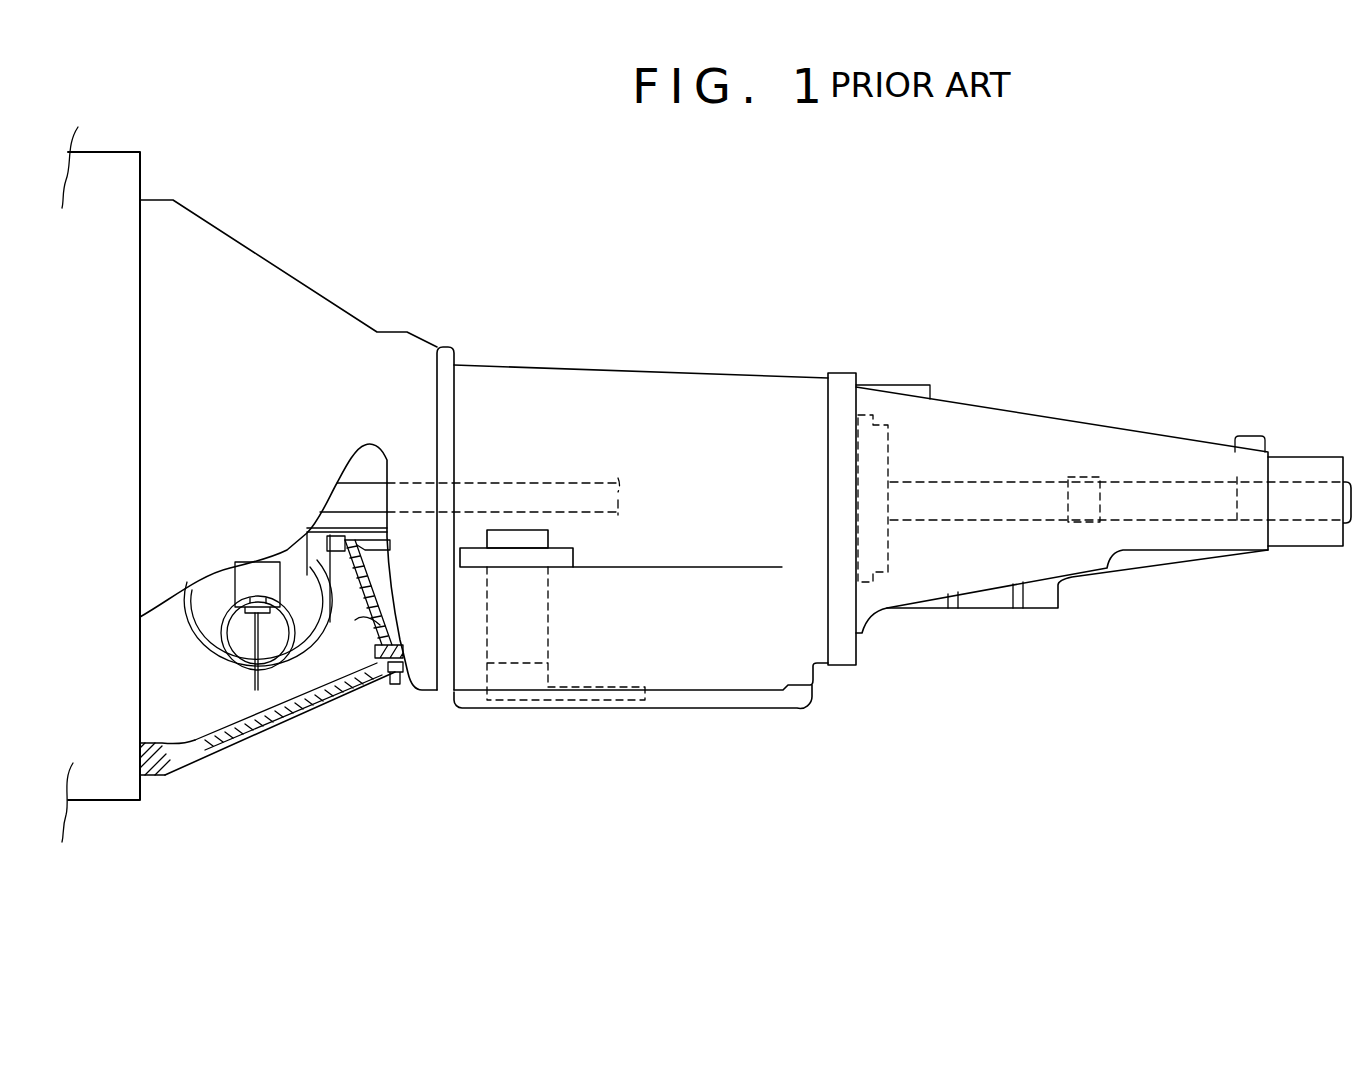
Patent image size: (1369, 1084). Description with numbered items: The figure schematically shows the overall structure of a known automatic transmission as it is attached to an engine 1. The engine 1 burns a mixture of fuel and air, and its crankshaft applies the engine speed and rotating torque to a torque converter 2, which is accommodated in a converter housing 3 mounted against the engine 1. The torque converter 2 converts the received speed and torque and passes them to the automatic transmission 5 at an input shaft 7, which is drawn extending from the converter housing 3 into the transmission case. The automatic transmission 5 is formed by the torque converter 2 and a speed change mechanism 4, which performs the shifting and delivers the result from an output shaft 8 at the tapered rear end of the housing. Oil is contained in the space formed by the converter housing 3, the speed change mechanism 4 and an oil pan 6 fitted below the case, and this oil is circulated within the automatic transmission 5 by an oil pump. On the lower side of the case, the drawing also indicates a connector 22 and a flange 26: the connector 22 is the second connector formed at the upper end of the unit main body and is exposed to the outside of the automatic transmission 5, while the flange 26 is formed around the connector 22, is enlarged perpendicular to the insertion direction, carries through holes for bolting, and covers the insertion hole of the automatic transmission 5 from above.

The engine 1 is at (105, 801).
The torque converter 2 is at (297, 489).
The converter housing 3 is at (253, 718).
The speed change mechanism 4 is at (545, 368).
The automatic transmission 5 is at (584, 258).
The oil pan 6 is at (677, 676).
The input shaft 7 is at (350, 498).
The output shaft 8 is at (985, 496).
The connector 22 is at (525, 537).
The flange 26 is at (568, 556).